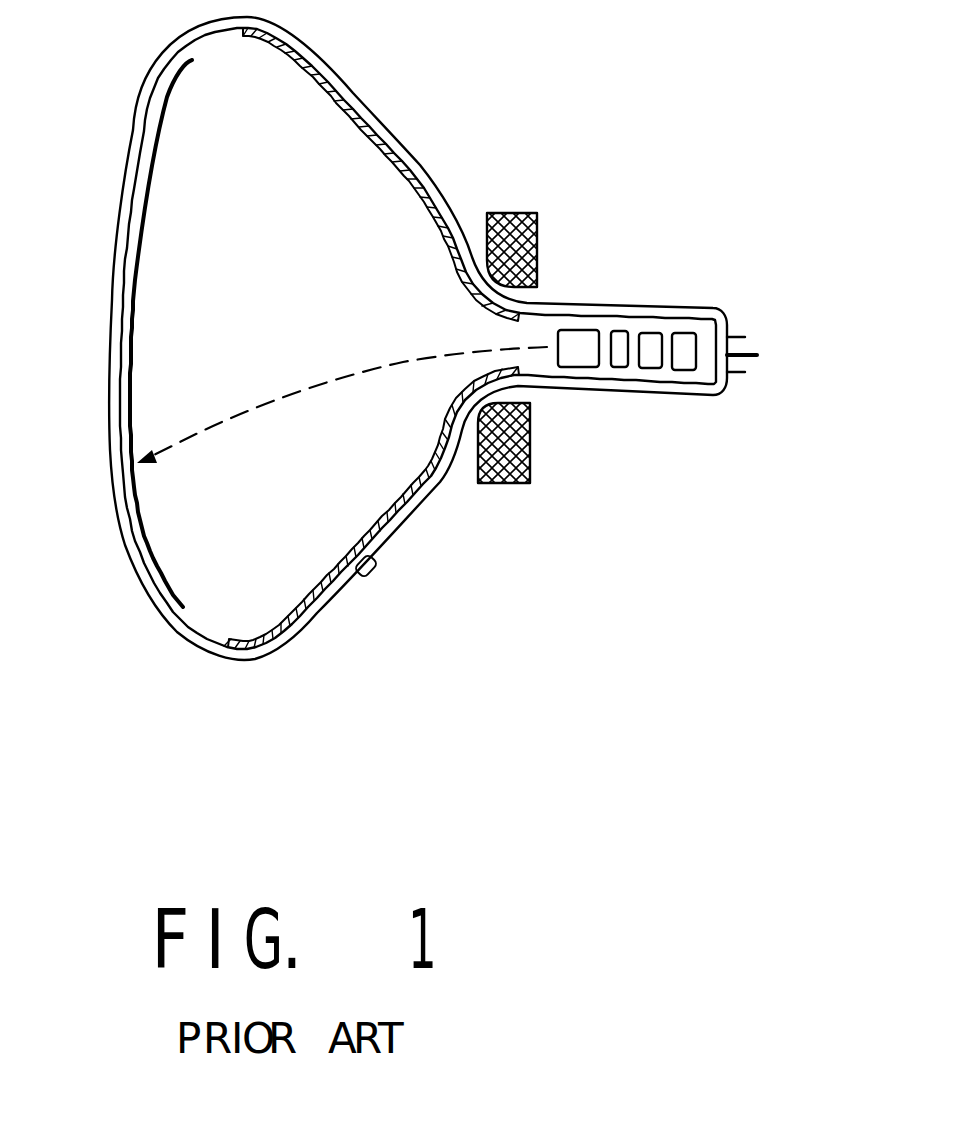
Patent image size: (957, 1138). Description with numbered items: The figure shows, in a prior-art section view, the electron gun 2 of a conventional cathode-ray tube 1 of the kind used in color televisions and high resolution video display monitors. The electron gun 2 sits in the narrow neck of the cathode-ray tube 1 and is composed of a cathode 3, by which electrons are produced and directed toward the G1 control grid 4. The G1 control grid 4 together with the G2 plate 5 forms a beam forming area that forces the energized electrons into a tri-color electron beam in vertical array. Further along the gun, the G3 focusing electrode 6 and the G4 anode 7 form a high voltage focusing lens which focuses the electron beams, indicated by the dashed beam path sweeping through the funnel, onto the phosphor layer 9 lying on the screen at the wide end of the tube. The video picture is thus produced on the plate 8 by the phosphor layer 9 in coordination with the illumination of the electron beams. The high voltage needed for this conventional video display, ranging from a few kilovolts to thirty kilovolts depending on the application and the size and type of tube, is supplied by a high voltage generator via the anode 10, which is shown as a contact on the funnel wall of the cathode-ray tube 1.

The cathode-ray tube 1 is at (279, 682).
The electron gun 2 is at (627, 376).
The cathode 3 is at (757, 355).
The G1 control grid 4 is at (689, 338).
The G2 plate 5 is at (651, 338).
The G3 focusing electrode 6 is at (621, 338).
The G4 anode 7 is at (582, 338).
The plate 8 is at (133, 130).
The phosphor layer 9 is at (160, 610).
The anode 10 is at (372, 580).